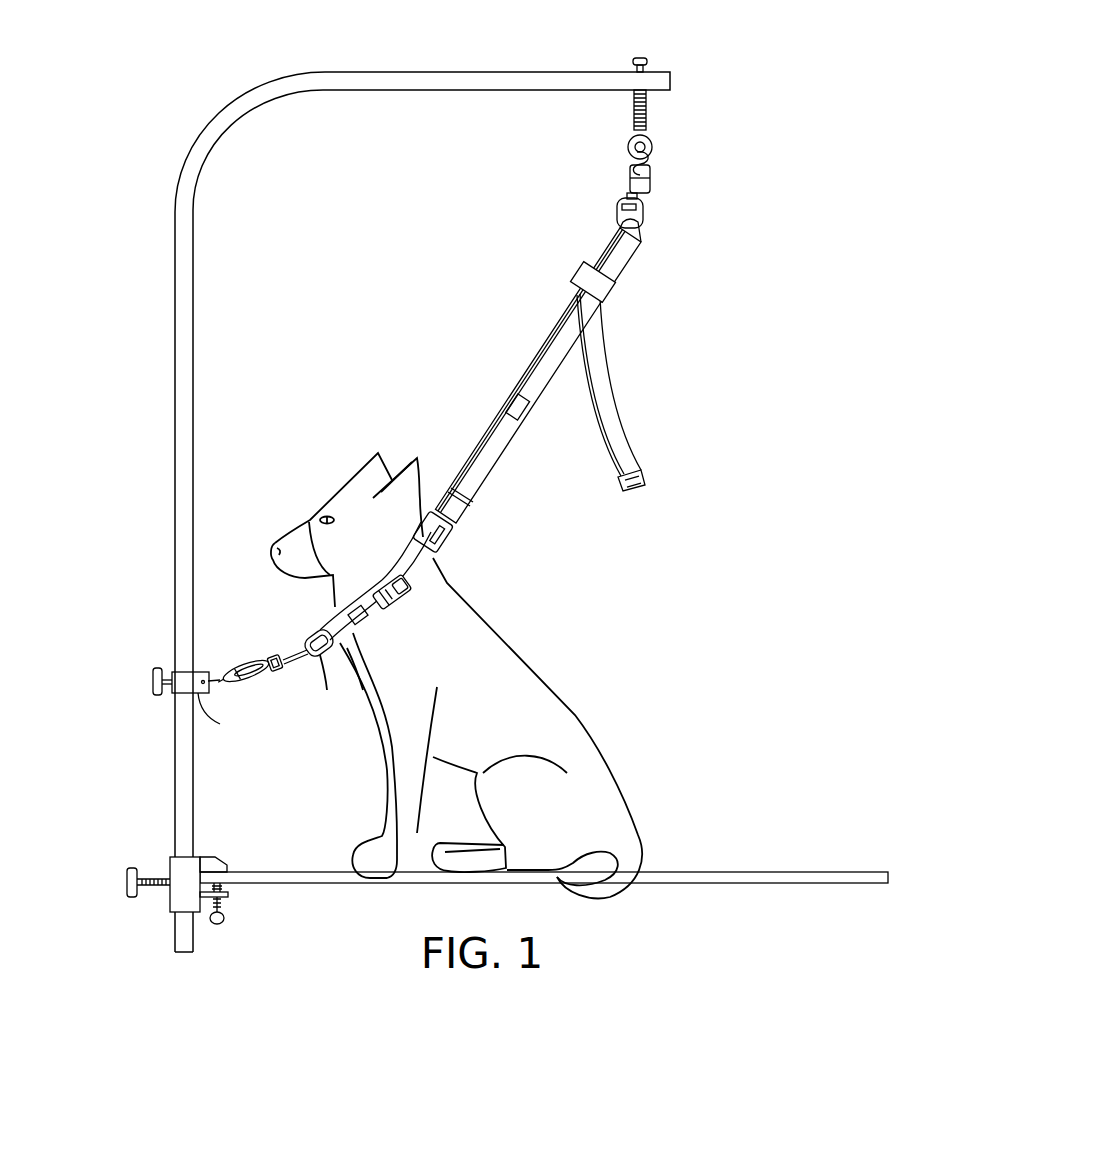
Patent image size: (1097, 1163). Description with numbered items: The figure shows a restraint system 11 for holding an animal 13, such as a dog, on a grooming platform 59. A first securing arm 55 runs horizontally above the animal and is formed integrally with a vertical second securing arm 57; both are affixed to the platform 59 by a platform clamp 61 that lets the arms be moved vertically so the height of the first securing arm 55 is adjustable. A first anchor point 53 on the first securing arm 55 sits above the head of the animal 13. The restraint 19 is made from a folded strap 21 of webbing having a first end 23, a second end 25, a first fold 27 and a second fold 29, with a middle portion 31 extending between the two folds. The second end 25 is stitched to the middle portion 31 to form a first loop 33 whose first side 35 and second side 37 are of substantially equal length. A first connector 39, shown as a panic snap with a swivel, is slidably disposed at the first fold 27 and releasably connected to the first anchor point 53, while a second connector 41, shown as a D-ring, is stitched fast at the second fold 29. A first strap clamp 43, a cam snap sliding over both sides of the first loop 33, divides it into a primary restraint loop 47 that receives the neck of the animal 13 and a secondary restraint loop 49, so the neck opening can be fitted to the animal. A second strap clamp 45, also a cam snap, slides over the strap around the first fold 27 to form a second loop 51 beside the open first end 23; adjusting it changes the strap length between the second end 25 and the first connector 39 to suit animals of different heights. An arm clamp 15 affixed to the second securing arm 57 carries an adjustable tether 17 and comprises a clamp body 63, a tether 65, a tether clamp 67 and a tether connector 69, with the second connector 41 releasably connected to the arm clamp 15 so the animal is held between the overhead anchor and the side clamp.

The restraint system 11 is at (840, 167).
The animal 13 is at (570, 735).
The arm clamp 15 is at (172, 676).
The adjustable tether 17 is at (256, 664).
The restraint 19 is at (480, 436).
The folded strap 21 is at (553, 322).
The first end 23 is at (655, 483).
The second end 25 is at (520, 416).
The first fold 27 is at (650, 245).
The second fold 29 is at (352, 630).
The middle portion 31 is at (540, 363).
The first loop 33 is at (315, 605).
The first side 35 is at (310, 605).
The second side 37 is at (372, 625).
The first connector 39 is at (648, 182).
The second connector 41 is at (320, 658).
The first strap clamp 43 is at (475, 528).
The second strap clamp 45 is at (606, 280).
The primary restraint loop 47 is at (447, 572).
The secondary restraint loop 49 is at (466, 482).
The second loop 51 is at (617, 222).
The first anchor point 53 is at (650, 137).
The first securing arm 55 is at (468, 76).
The second securing arm 57 is at (192, 408).
The platform 59 is at (735, 878).
The platform clamp 61 is at (178, 906).
The clamp body 63 is at (168, 690).
The tether 65 is at (225, 660).
The tether clamp 67 is at (265, 670).
The tether connector 69 is at (290, 686).